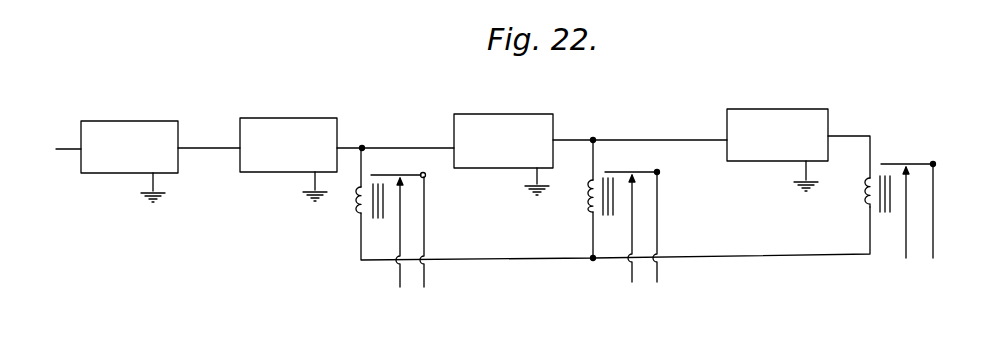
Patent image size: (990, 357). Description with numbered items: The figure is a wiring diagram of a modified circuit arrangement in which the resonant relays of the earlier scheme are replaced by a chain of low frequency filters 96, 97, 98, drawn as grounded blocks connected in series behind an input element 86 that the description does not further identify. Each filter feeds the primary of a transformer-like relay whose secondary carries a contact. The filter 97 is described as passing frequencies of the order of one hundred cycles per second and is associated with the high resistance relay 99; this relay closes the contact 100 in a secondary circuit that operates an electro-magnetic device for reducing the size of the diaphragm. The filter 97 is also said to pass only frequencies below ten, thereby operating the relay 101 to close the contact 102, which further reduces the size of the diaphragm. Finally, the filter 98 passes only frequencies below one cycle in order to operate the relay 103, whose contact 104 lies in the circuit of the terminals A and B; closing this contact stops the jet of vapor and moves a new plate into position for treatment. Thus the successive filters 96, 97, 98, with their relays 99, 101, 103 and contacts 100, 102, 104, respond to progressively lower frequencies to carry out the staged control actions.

The amplifier stage 86 is at (129, 114).
The low frequency filter 96 is at (281, 129).
The low frequency filter 97 is at (491, 120).
The low frequency filter 98 is at (766, 118).
The high resistance relay 99 is at (356, 209).
The contact 100 is at (403, 181).
The relay 101 is at (590, 197).
The contact 102 is at (636, 178).
The relay 103 is at (866, 197).
The contact 104 is at (910, 171).